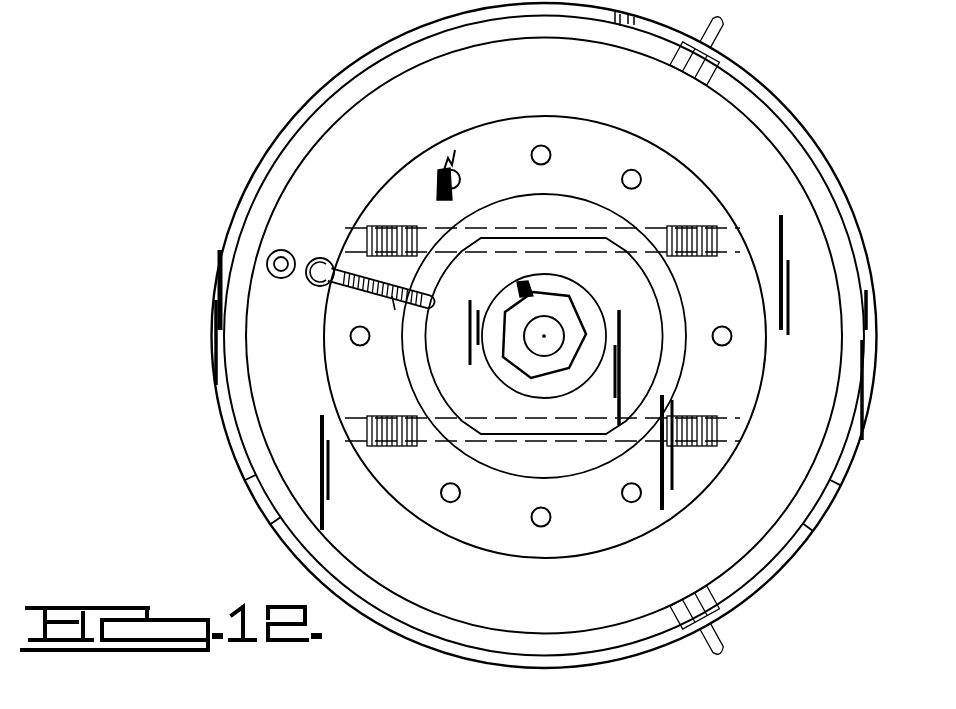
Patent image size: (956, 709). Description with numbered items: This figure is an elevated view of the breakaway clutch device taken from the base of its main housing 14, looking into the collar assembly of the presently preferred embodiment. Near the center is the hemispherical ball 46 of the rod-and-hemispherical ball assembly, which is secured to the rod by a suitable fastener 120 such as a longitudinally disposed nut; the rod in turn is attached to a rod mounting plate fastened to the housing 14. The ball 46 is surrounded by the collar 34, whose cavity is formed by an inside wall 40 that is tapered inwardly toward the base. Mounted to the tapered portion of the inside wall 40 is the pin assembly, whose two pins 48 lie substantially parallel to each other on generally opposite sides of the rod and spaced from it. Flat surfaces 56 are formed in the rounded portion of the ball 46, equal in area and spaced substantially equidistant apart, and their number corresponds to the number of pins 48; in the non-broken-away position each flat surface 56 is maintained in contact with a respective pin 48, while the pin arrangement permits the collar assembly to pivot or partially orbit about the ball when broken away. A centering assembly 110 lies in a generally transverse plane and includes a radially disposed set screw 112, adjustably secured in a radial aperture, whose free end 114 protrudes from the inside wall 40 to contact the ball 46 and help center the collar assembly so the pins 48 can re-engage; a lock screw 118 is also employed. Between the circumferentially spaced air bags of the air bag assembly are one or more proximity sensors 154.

The main housing 14 is at (800, 128).
The proximity sensor 154 is at (733, 44).
The collar 34 is at (553, 558).
The flat surfaces 56 is at (553, 230).
The pins 48 is at (693, 230).
The inside wall 40 is at (670, 328).
The hemispherical ball 46 is at (640, 371).
The fastener 120 is at (525, 357).
The free end 114 is at (433, 299).
The centering assembly 110 is at (343, 297).
The lock screw 118 is at (348, 302).
The set screw 112 is at (395, 312).